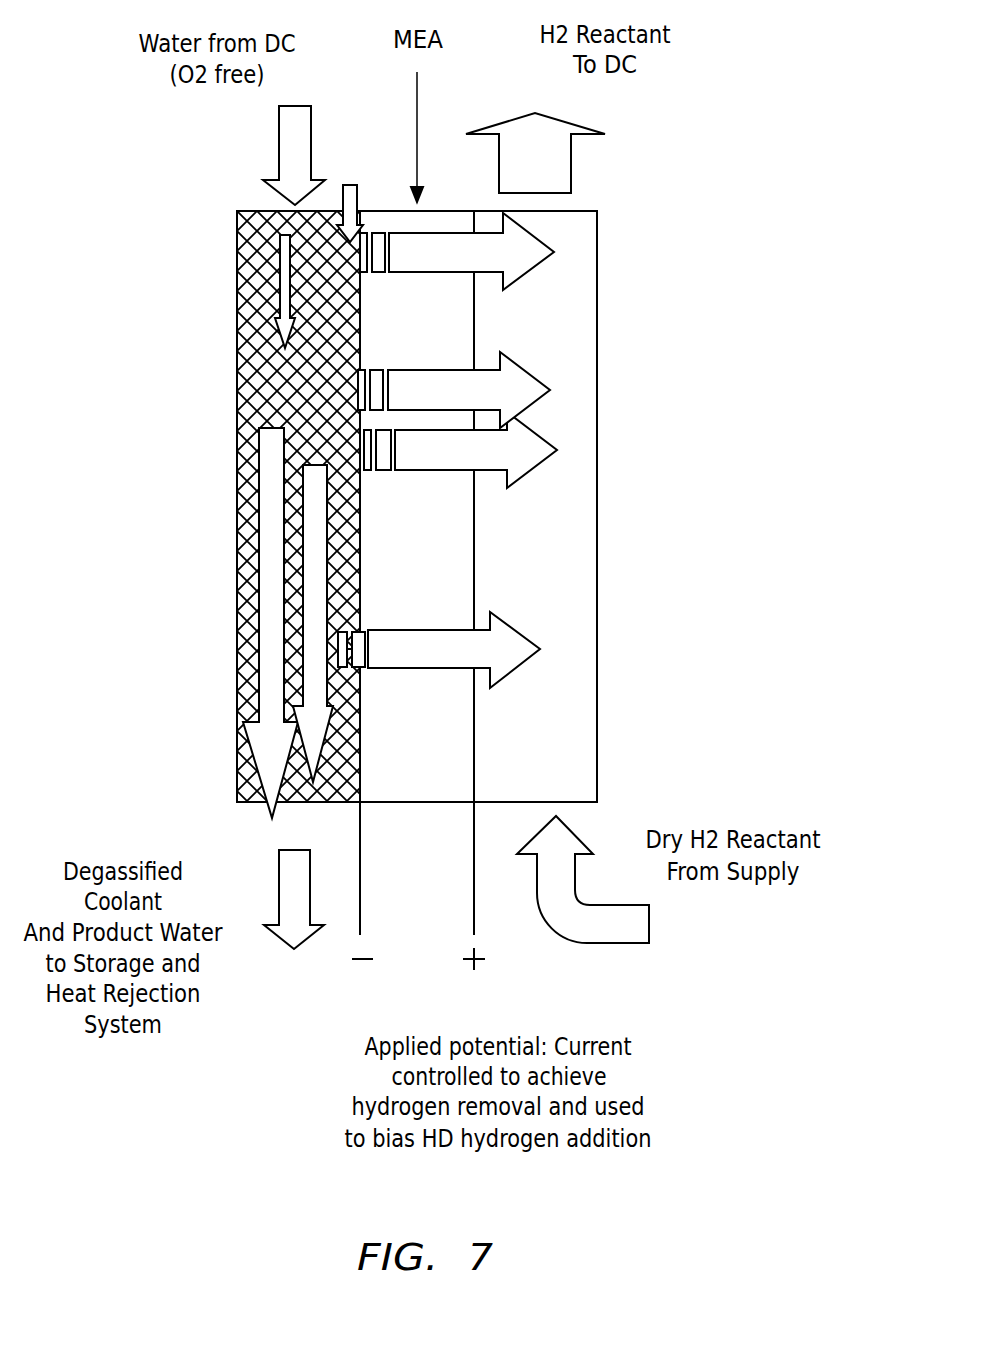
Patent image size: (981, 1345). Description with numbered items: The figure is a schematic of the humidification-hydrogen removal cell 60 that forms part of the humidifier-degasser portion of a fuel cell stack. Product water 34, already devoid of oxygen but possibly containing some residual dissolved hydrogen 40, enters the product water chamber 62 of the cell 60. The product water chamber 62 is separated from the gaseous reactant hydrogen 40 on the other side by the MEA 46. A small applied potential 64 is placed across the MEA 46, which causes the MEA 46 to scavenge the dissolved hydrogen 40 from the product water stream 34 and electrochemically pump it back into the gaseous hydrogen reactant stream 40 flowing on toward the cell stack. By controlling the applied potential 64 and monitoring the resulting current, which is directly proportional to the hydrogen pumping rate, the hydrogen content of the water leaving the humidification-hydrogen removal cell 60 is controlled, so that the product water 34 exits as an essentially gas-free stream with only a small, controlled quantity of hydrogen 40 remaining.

The product water 34 is at (302, 106).
The hydrogen 40 is at (285, 283).
The MEA 46 is at (433, 337).
The humidification-hydrogen removal cell 60 is at (167, 359).
The product water chamber 62 is at (237, 413).
The applied potential 64 is at (371, 967).